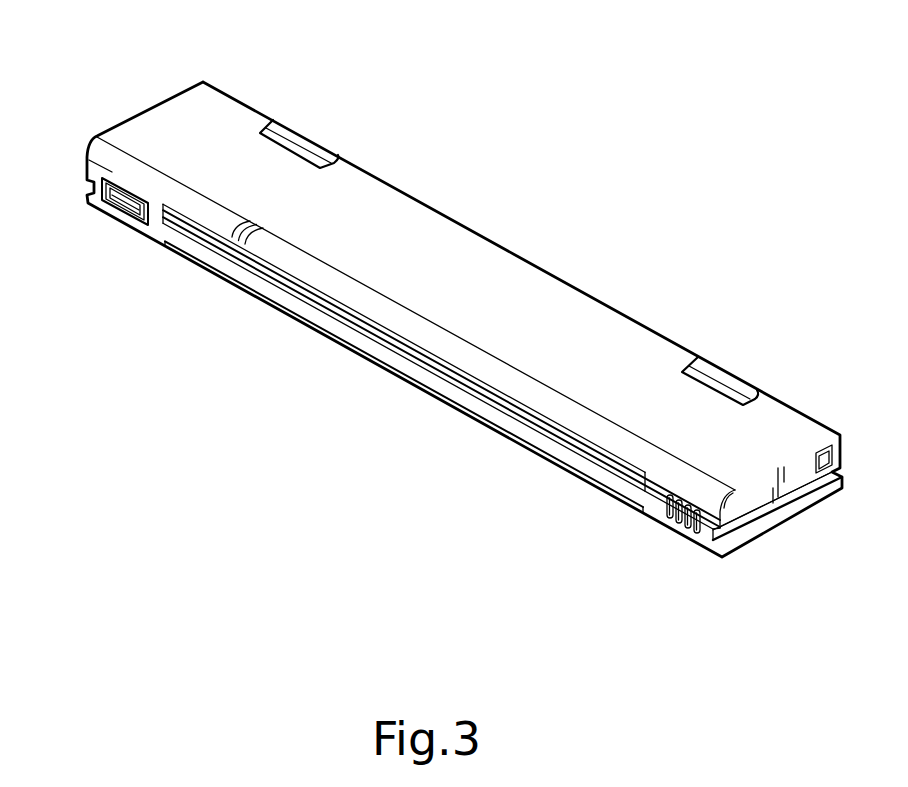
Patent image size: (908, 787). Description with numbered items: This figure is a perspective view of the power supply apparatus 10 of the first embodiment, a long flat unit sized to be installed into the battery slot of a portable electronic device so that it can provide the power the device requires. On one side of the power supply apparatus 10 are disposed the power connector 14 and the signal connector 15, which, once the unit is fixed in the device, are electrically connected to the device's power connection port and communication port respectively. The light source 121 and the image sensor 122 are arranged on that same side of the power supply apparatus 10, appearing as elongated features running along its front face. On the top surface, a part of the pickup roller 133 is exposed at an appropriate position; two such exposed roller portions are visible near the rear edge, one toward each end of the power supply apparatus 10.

The power supply apparatus 10 is at (468, 200).
The power connector 14 is at (660, 524).
The signal connector 15 is at (130, 211).
The light source 121 is at (378, 333).
The image sensor 122 is at (428, 378).
The pickup roller 133 is at (303, 132).